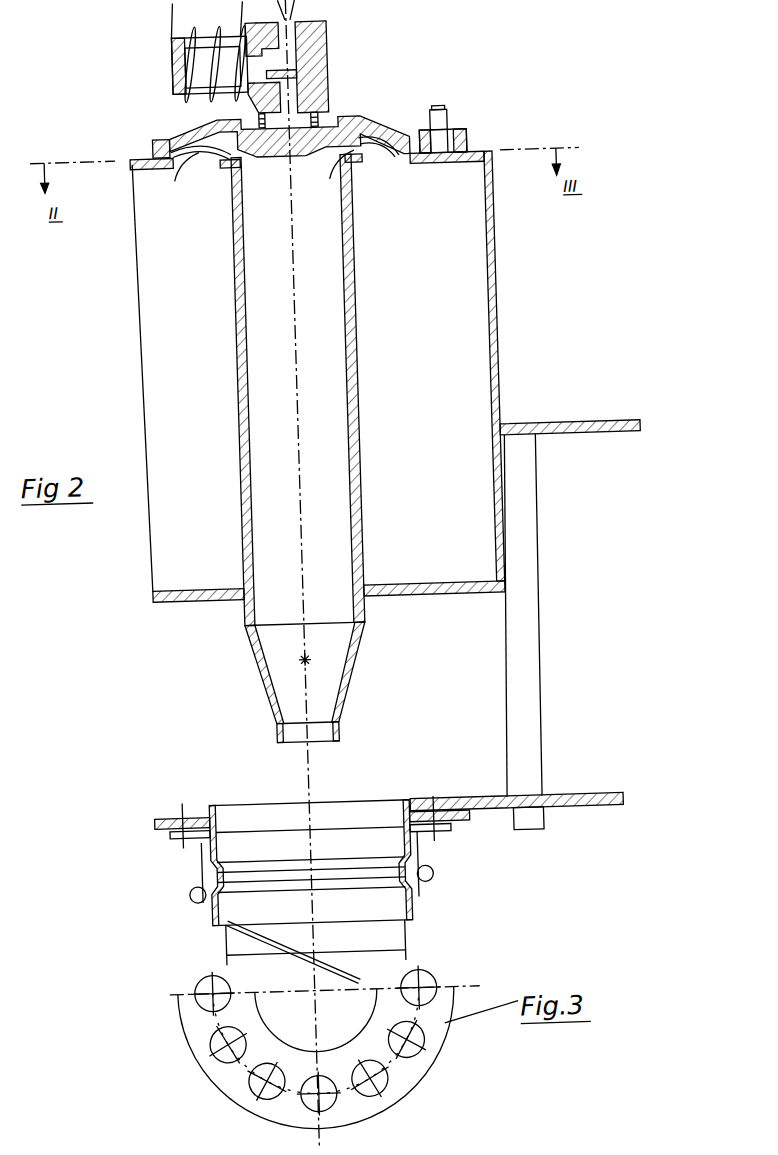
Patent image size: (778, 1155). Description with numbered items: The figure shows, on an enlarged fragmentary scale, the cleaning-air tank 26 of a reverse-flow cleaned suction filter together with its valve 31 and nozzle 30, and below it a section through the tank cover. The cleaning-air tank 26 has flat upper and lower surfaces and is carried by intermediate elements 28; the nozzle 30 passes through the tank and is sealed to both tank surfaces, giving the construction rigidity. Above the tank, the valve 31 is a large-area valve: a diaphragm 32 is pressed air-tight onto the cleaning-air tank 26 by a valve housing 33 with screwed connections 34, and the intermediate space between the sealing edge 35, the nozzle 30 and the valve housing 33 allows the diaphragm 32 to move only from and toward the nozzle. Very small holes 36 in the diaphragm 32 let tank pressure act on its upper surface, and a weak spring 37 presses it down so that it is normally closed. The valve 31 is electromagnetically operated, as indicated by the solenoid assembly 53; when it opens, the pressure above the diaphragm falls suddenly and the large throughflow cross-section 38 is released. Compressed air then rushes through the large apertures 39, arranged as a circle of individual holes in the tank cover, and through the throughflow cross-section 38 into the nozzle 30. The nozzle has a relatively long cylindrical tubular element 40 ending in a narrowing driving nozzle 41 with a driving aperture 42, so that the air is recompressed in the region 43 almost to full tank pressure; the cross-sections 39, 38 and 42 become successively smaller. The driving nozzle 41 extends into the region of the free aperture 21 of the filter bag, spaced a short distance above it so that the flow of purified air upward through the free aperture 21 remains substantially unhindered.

In FIG. 2, the free aperture 21 is at (323, 835).
In FIG. 2, the cleaning-air tank 26 is at (499, 264).
In FIG. 2, the intermediate elements 28 is at (511, 519).
In FIG. 2, the nozzle 30 is at (356, 389).
In FIG. 2, the valve 31 is at (335, 51).
In FIG. 2, the diaphragm 32 is at (364, 128).
In FIG. 2, the valve housing 33 is at (441, 113).
In FIG. 2, the screwed connections 34 is at (461, 128).
In FIG. 2, the sealing edge 35 is at (378, 158).
In FIG. 2, the holes 36 is at (200, 145).
In FIG. 2, the spring 37 is at (322, 110).
In FIG. 2, the throughflow cross-section 38 is at (208, 156).
In FIG. 2, the apertures 39 is at (398, 151).
In FIG. 3, the apertures 39 is at (408, 979).
In FIG. 2, the cylindrical tubular element 40 is at (235, 427).
In FIG. 2, the driving nozzle 41 is at (247, 674).
In FIG. 2, the driving aperture 42 is at (296, 735).
In FIG. 2, the region 43 is at (299, 660).
In FIG. 2, the solenoid assembly 53 is at (177, 65).